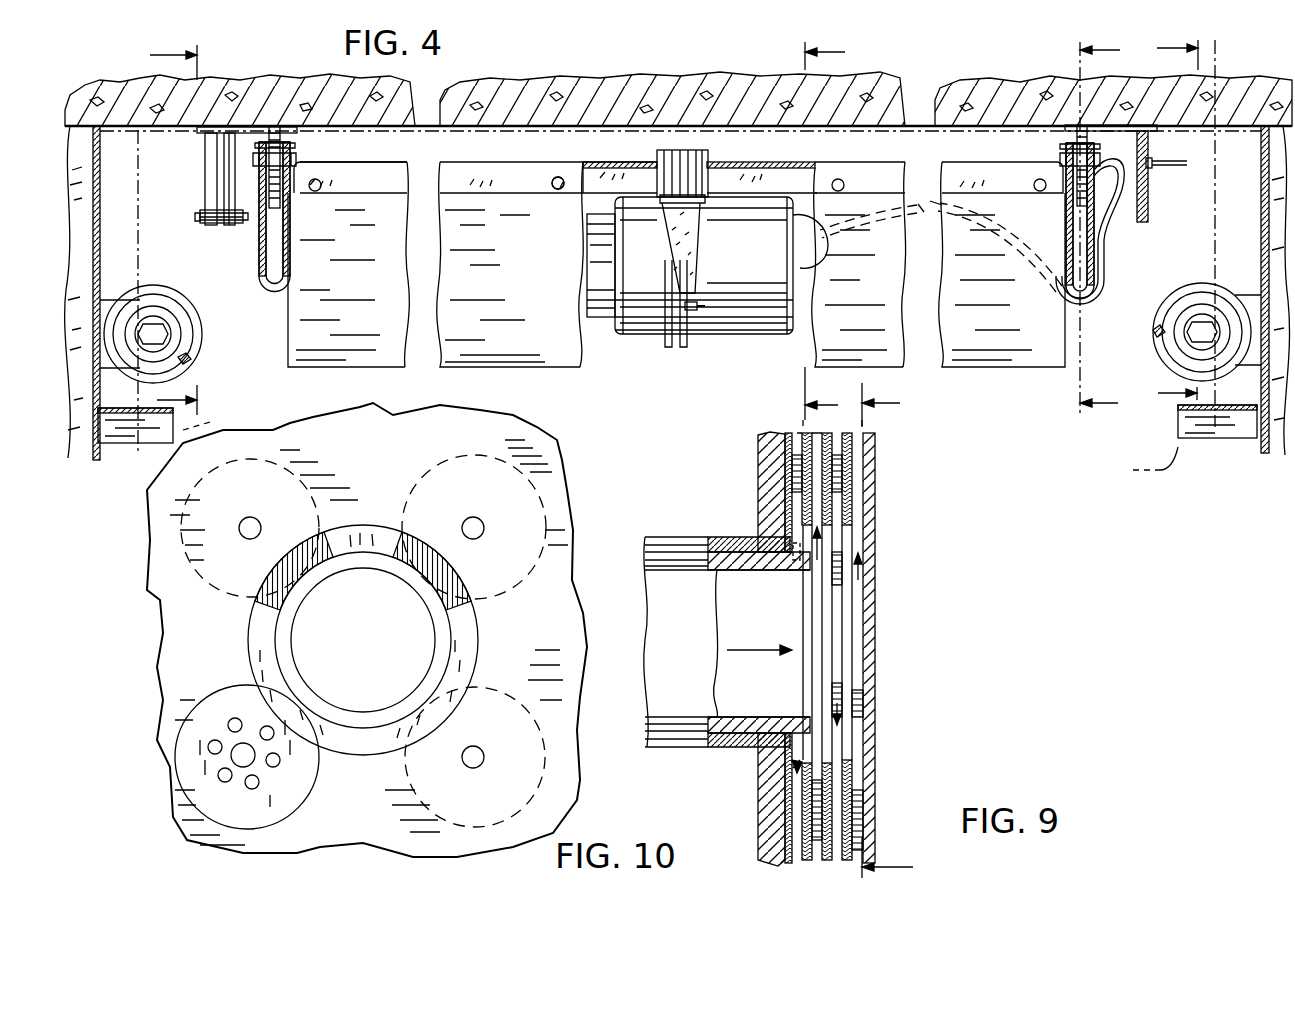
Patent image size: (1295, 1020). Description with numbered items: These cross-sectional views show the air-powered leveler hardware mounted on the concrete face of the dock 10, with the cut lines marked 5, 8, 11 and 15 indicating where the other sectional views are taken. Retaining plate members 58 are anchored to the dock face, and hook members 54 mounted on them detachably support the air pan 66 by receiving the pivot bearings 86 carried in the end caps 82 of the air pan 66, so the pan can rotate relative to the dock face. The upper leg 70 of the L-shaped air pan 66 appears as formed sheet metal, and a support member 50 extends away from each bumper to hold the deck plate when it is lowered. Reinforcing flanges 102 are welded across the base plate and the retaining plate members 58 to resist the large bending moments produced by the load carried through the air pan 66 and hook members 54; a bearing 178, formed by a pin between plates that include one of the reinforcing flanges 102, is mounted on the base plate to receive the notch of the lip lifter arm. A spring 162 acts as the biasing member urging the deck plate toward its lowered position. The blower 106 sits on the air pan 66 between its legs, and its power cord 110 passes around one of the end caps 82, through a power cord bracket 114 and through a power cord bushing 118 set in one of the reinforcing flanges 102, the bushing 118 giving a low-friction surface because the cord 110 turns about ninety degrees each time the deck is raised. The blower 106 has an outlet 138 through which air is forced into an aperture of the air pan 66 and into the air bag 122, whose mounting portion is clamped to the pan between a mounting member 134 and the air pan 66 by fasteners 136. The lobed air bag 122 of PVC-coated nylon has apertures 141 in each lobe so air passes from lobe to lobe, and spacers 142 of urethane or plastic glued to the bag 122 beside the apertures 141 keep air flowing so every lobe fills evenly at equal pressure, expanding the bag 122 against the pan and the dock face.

In FIG. 4, the section line 15 is at (190, 229).
In FIG. 4, the retaining plate members 58 is at (268, 137).
In FIG. 4, the pivot bearings 86 is at (271, 140).
In FIG. 4, the hook members 54 is at (282, 193).
In FIG. 4, the section line 8 is at (813, 231).
In FIG. 4, the section line 5 is at (1088, 229).
In FIG. 4, the section line 11 is at (1183, 222).
In FIG. 4, the reinforcing flanges 102 is at (199, 161).
In FIG. 4, the bearing 178 is at (217, 227).
In FIG. 4, the spring 162 is at (183, 293).
In FIG. 4, the end caps 82 is at (258, 278).
In FIG. 4, the upper leg 70 is at (383, 288).
In FIG. 4, the support member 50 is at (117, 435).
In FIG. 4, the mounting member 134 is at (507, 187).
In FIG. 4, the fasteners 136 is at (558, 189).
In FIG. 4, the outlet 138 is at (688, 160).
In FIG. 10, the outlet 138 is at (250, 618).
In FIG. 9, the outlet 138 is at (748, 690).
In FIG. 4, the blower 106 is at (763, 285).
In FIG. 4, the power cord 110 is at (803, 332).
In FIG. 4, the power cord bushing 118 is at (1148, 163).
In FIG. 4, the power cord bracket 114 is at (1113, 233).
In FIG. 4, the dock 10 is at (897, 405).
In FIG. 9, the dock 10 is at (873, 649).
In FIG. 10, the spacers 142 is at (402, 463).
In FIG. 9, the spacers 142 is at (840, 530).
In FIG. 10, the apertures 141 is at (358, 703).
In FIG. 9, the apertures 141 is at (830, 643).
In FIG. 9, the air pan 66 is at (757, 507).
In FIG. 9, the air bag 122 is at (890, 702).